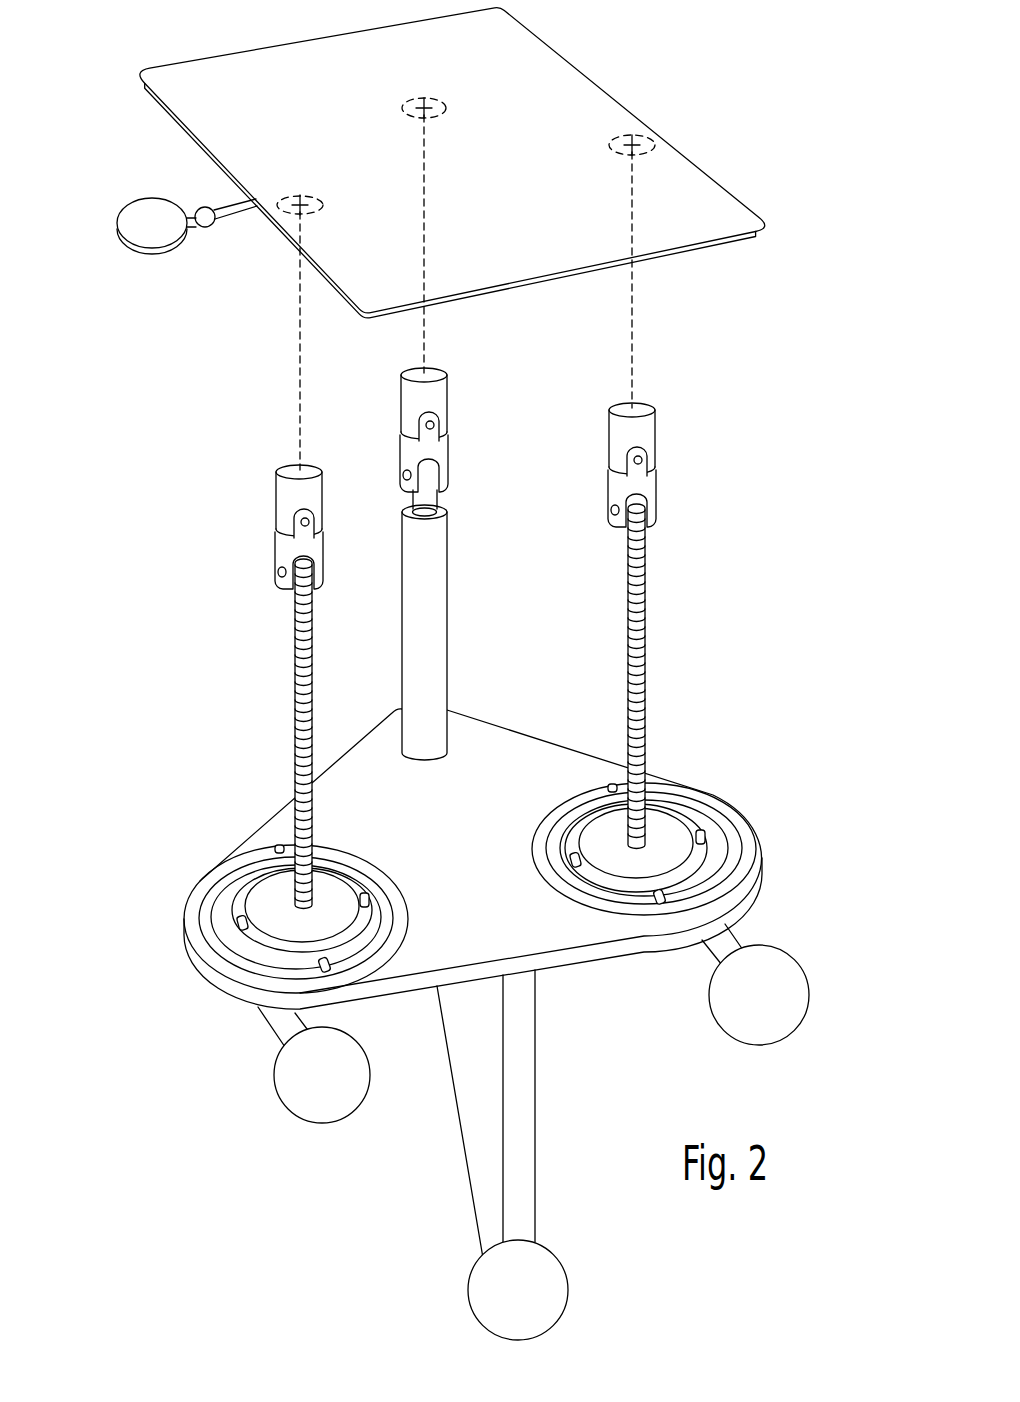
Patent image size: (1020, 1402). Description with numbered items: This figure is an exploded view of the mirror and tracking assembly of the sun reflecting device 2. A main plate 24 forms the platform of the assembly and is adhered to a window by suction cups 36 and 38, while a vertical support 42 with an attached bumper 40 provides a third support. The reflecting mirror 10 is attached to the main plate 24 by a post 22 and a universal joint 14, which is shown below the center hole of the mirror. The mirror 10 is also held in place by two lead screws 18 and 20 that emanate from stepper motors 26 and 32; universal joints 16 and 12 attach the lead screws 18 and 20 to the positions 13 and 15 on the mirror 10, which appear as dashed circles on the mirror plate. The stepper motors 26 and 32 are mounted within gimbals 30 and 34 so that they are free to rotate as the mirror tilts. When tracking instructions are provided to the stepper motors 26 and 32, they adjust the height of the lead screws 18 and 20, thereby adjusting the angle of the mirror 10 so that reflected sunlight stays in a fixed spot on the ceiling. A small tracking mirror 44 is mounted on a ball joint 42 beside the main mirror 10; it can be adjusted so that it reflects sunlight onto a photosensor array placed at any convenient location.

The sun reflecting device 2 is at (233, 378).
The mirror 10 is at (268, 64).
The universal joint 12 is at (283, 485).
The position on mirror 13 is at (292, 199).
The universal joint 14 is at (438, 402).
The position on mirror 15 is at (621, 151).
The universal joint 16 is at (650, 433).
The lead screw 18 is at (640, 630).
The lead screw 20 is at (300, 668).
The post 22 is at (440, 612).
The main plate 24 is at (540, 753).
The stepper motor 26 is at (675, 823).
The gimbal 30 is at (705, 818).
The stepper motor 32 is at (268, 887).
The gimbal 34 is at (230, 887).
The suction cup 36 is at (278, 1077).
The suction cup 38 is at (795, 975).
The bumper 40 is at (563, 1290).
The vertical support 42 is at (212, 230).
The tracking mirror 44 is at (130, 208).